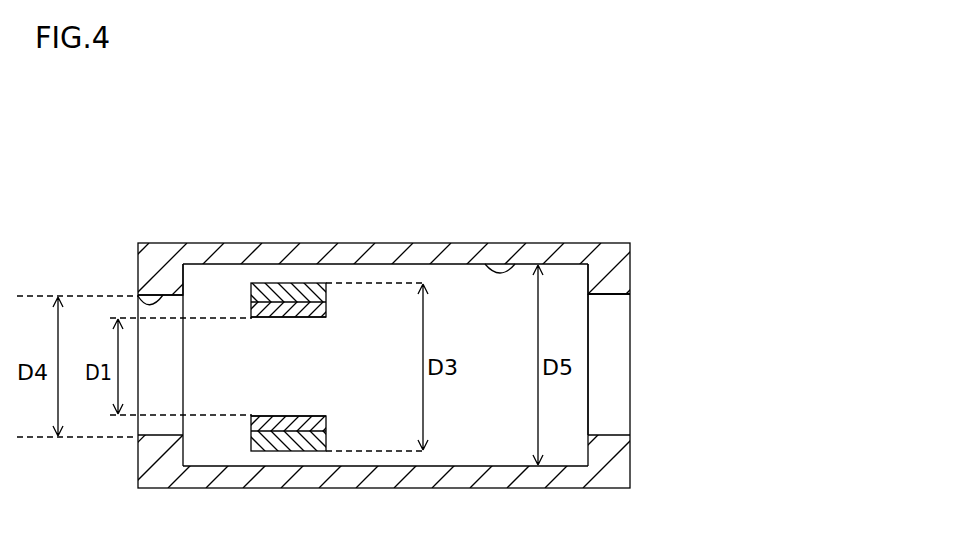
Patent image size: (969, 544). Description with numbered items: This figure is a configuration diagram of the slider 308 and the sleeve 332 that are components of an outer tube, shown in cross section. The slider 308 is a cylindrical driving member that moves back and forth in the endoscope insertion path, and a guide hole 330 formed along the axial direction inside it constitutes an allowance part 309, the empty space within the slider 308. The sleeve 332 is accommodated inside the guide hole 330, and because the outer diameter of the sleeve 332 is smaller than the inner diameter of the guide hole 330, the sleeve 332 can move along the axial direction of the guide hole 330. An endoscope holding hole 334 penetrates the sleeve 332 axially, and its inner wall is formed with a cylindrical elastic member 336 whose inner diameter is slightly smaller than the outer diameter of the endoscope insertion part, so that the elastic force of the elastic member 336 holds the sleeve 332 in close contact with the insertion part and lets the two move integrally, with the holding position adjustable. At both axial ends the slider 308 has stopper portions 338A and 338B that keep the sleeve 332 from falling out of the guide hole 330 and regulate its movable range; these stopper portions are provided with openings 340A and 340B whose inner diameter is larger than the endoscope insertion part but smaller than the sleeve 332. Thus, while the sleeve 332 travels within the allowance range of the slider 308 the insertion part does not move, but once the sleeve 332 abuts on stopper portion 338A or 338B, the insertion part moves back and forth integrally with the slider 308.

The slider 308 is at (418, 256).
The allowance part 309 is at (573, 285).
The guide hole 330 is at (516, 274).
The sleeve 332 is at (268, 282).
The endoscope holding hole 334 is at (312, 316).
The elastic member 336 is at (281, 316).
The stopper portion 338A is at (153, 271).
The stopper portion 338B is at (620, 275).
The opening 340A is at (138, 296).
The opening 340B is at (613, 295).